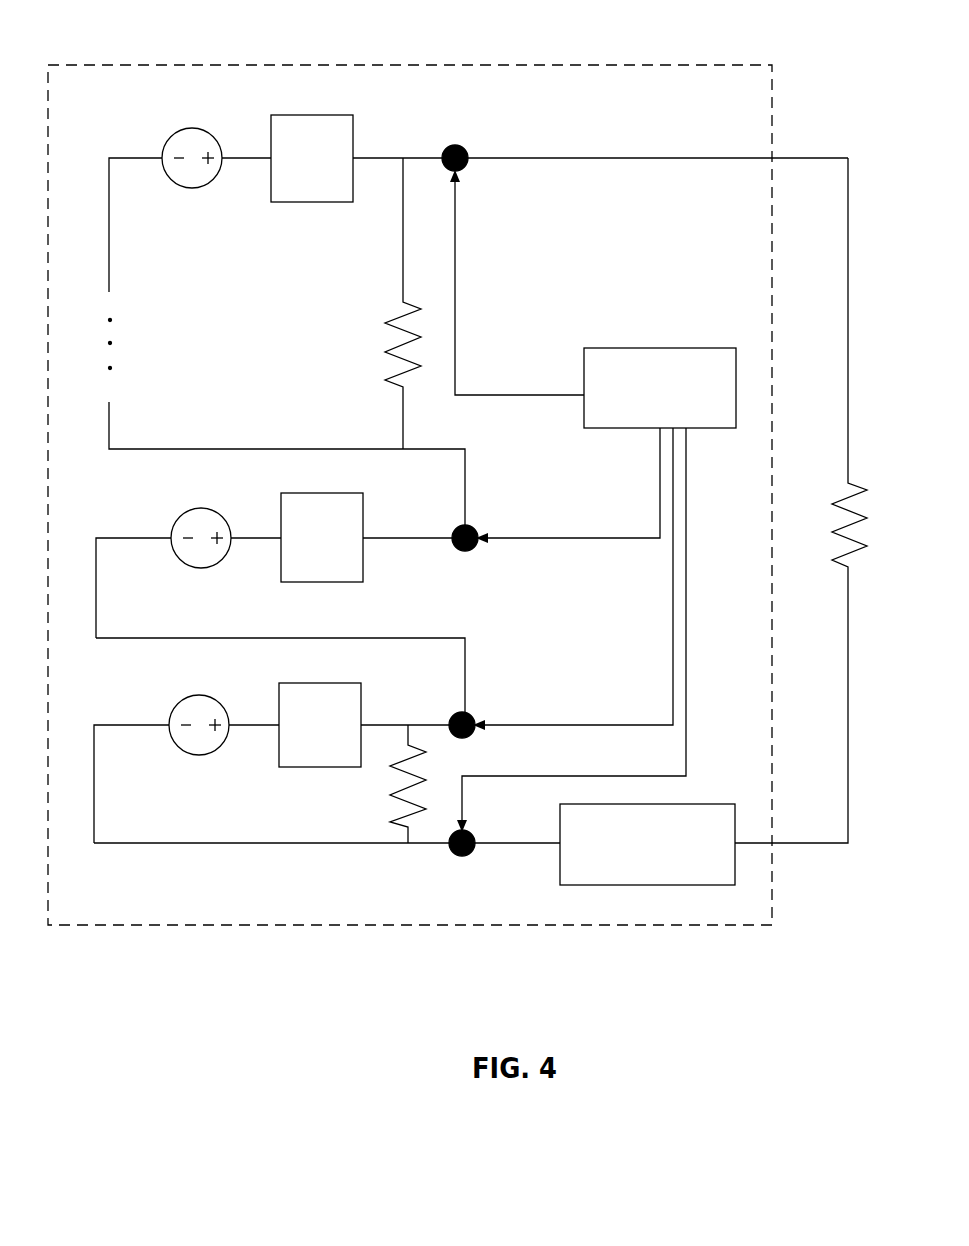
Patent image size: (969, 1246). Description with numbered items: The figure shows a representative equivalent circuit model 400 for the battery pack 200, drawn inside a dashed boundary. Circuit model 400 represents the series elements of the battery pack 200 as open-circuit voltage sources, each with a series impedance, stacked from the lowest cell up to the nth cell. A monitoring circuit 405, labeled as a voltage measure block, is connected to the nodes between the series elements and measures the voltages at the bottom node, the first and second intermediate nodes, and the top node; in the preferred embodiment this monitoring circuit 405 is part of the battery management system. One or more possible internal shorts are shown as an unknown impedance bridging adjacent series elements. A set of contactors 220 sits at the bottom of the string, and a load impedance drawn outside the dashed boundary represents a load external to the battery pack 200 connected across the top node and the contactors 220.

The equivalent circuit model 400 is at (795, 47).
The battery pack 200 is at (480, 495).
The monitoring circuit 405 is at (655, 348).
The set of contactors 220 is at (647, 844).